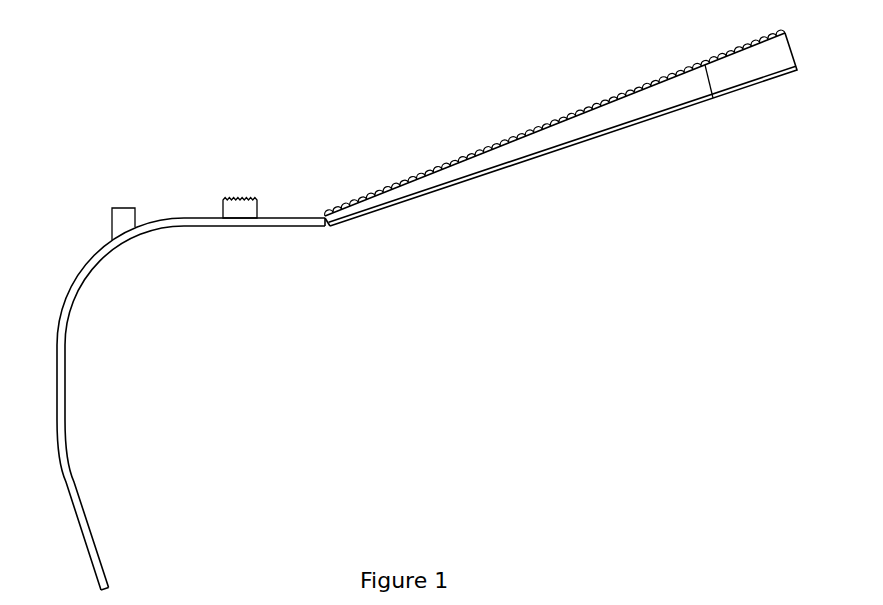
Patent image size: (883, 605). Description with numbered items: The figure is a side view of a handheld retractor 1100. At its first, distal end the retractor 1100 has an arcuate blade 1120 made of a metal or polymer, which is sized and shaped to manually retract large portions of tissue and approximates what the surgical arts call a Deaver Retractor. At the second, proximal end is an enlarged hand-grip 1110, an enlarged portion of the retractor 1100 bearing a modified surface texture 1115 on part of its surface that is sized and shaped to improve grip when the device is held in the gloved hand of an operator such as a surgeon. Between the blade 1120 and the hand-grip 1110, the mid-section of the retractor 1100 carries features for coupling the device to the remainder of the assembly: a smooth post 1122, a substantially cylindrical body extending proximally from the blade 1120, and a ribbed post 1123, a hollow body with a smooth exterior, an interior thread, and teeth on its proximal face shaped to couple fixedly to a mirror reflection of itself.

The handheld retractor 1100 is at (440, 299).
The hand-grip 1110 is at (596, 117).
The modified surface texture 1115 is at (578, 117).
The arcuate blade 1120 is at (68, 332).
The smooth post 1122 is at (123, 216).
The ribbed post 1123 is at (243, 211).